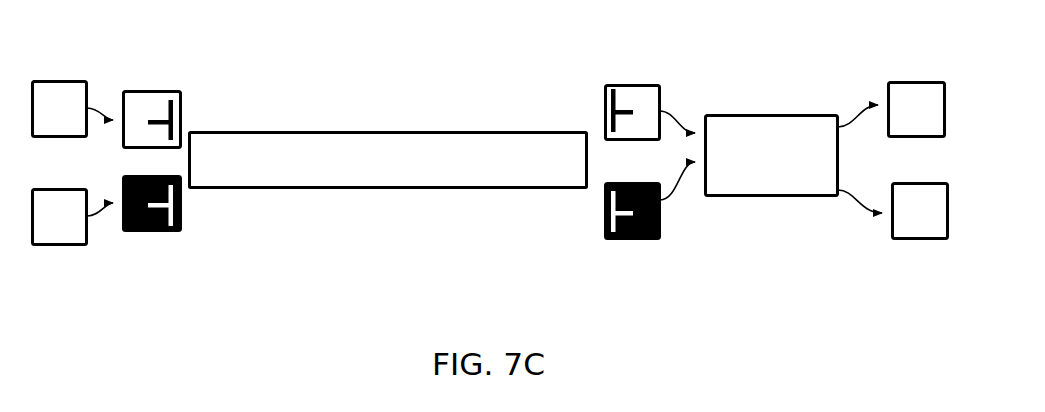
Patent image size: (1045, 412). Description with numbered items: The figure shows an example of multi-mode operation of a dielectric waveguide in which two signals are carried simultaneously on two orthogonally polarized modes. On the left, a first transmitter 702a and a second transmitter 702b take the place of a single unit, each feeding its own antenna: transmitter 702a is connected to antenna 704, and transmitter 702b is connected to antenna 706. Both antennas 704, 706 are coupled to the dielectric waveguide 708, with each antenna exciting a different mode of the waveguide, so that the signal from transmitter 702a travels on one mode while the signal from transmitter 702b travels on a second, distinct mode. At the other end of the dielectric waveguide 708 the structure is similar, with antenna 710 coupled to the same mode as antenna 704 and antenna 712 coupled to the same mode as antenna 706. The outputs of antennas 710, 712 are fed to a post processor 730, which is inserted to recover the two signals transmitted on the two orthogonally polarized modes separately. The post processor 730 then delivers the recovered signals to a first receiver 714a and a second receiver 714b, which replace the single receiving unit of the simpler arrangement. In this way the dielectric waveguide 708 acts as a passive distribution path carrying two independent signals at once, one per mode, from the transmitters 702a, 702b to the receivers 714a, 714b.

The transmitter 702a is at (82, 118).
The transmitter 702b is at (82, 226).
The antenna 704 is at (152, 90).
The antenna 706 is at (157, 232).
The dielectric waveguide 708 is at (352, 131).
The antenna 710 is at (620, 84).
The antenna 712 is at (630, 239).
The post processor 730 is at (795, 169).
The receiver 714a is at (938, 122).
The receiver 714b is at (942, 226).